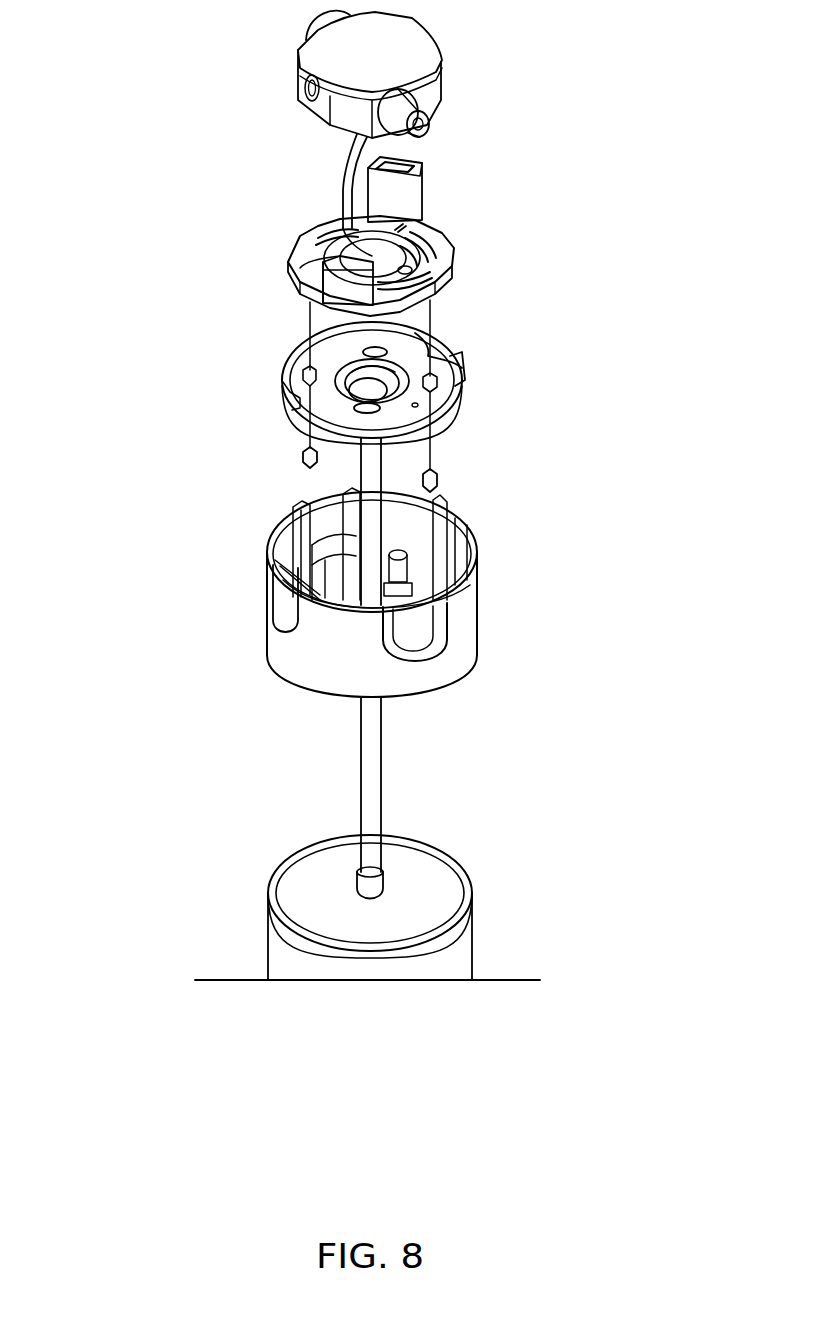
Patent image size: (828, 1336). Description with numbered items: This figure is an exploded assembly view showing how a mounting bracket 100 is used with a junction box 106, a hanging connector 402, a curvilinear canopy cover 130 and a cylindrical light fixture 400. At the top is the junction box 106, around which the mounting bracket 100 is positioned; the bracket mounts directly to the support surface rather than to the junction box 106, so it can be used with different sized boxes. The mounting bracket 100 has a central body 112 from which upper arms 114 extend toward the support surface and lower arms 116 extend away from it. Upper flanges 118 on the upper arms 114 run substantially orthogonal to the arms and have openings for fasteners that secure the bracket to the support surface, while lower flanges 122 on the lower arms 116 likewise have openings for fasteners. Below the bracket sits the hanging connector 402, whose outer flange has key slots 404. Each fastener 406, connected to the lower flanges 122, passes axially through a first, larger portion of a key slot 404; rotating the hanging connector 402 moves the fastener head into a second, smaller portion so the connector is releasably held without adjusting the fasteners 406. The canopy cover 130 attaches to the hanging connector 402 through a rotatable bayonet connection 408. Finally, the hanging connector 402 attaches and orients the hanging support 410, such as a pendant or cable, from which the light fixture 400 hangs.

The mounting bracket 100 is at (285, 220).
The junction box 106 is at (300, 72).
The central body 112 is at (322, 205).
The upper arms 114 is at (405, 203).
The lower arms 116 is at (455, 278).
The upper flanges 118 is at (430, 160).
The lower flanges 122 is at (290, 275).
The curvilinear canopy cover 130 is at (267, 627).
The light fixture 400 is at (462, 955).
The hanging connector 402 is at (480, 347).
The key slots 404 is at (440, 385).
The fastener 406 is at (435, 478).
The rotatable bayonet connection 408 is at (303, 412).
The hanging support 410 is at (383, 768).